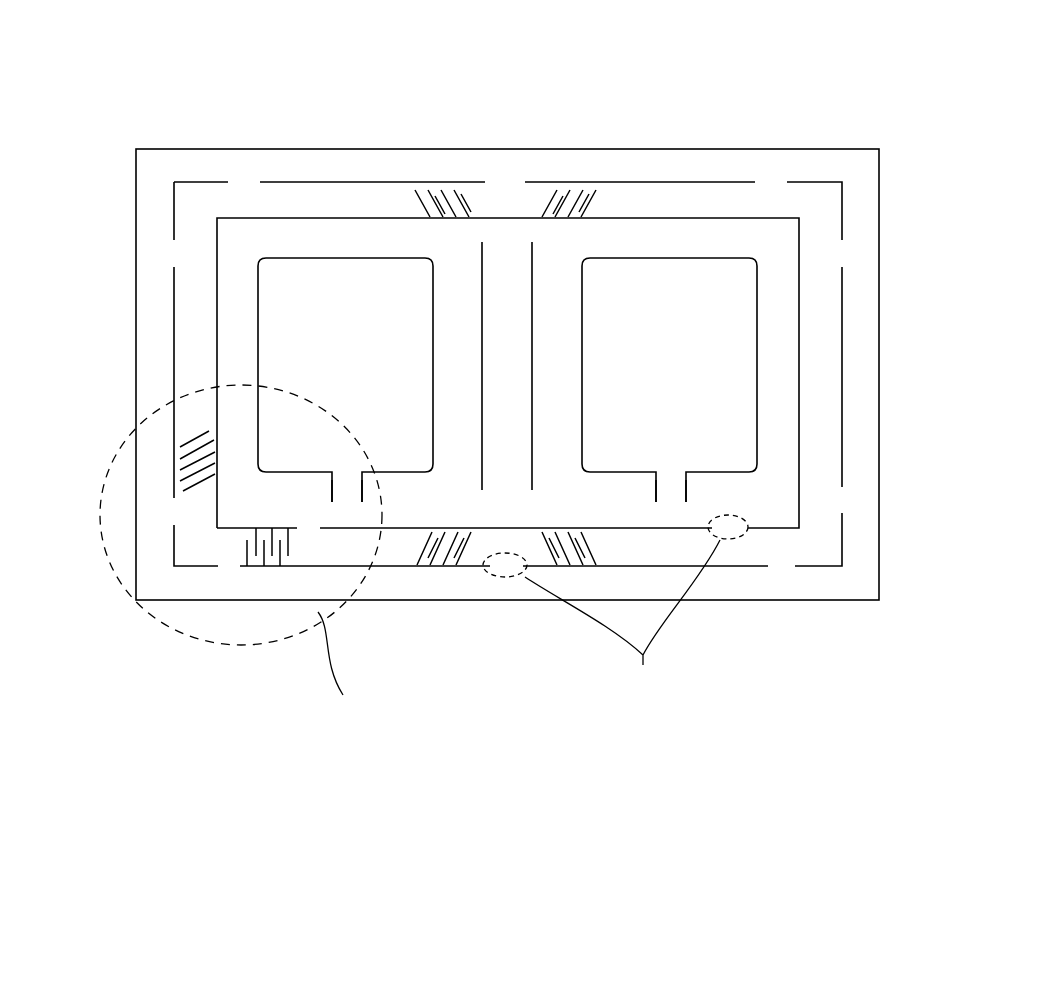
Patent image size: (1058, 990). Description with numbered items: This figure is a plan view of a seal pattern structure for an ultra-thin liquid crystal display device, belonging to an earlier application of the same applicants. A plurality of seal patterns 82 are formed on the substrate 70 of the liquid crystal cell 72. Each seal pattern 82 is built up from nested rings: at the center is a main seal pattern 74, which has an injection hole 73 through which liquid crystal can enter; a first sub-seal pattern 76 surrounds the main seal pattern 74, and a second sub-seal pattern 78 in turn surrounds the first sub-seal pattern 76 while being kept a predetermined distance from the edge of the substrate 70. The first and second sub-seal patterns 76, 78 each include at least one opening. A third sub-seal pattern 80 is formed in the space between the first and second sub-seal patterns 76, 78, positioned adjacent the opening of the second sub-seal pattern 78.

The substrate 70 is at (797, 149).
The liquid crystal cell 72 is at (718, 108).
The injection hole 73 is at (350, 476).
The main seal pattern 74 is at (389, 258).
The first sub-seal pattern 76 is at (627, 218).
The second sub-seal pattern 78 is at (313, 182).
The third sub-seal pattern 80 is at (477, 182).
The seal pattern 82 is at (290, 72).